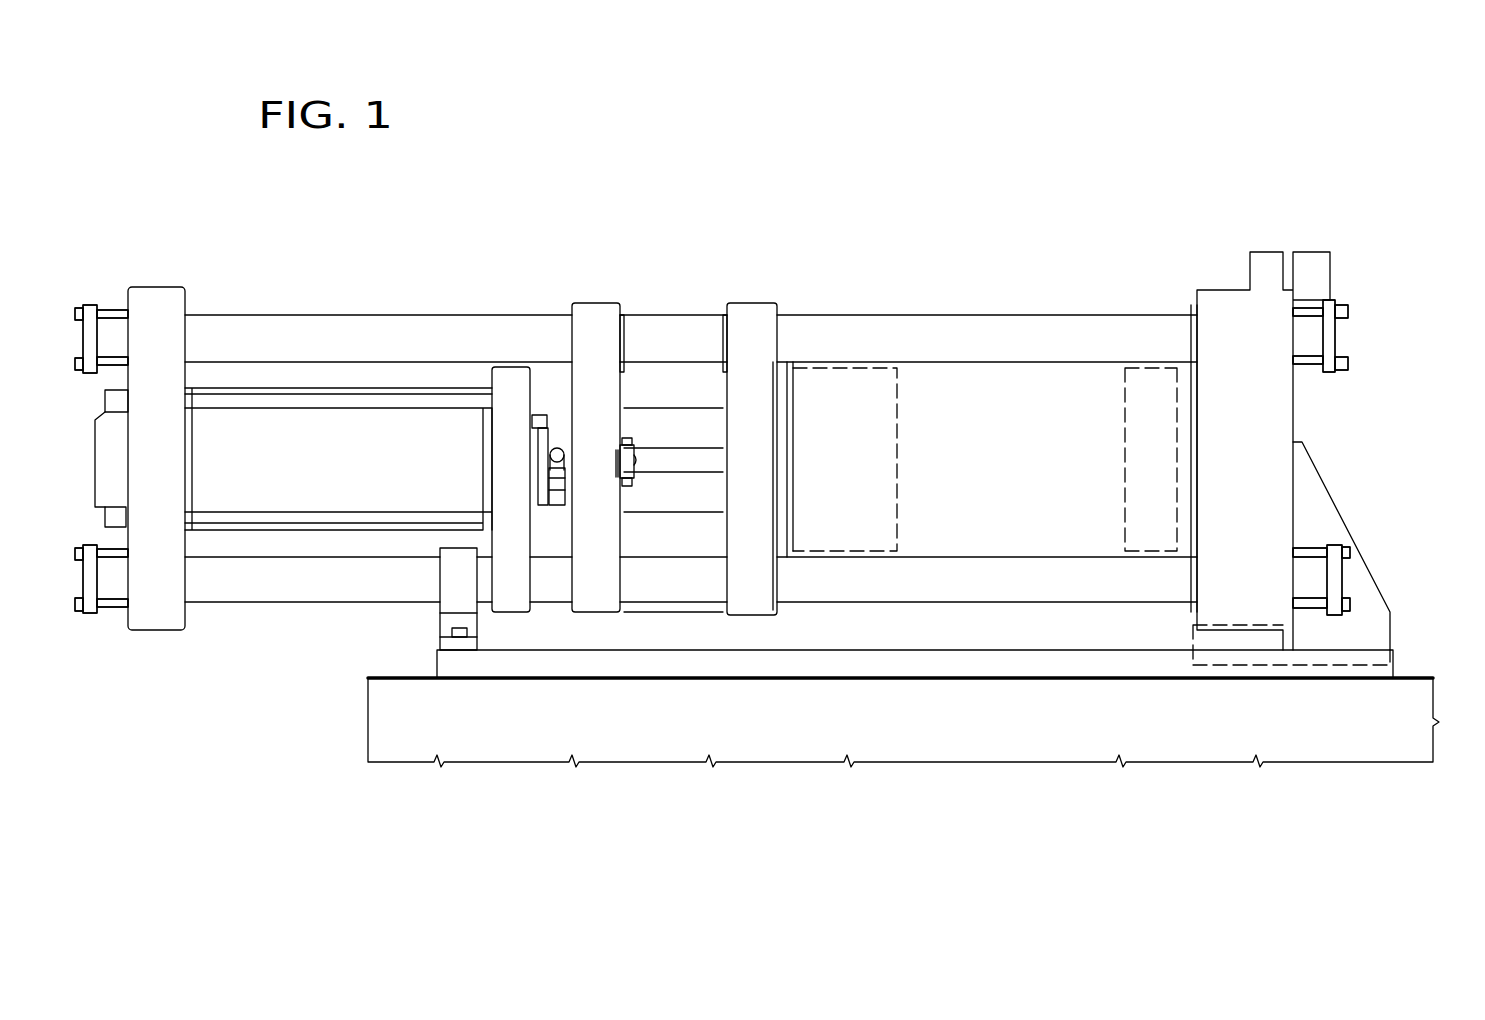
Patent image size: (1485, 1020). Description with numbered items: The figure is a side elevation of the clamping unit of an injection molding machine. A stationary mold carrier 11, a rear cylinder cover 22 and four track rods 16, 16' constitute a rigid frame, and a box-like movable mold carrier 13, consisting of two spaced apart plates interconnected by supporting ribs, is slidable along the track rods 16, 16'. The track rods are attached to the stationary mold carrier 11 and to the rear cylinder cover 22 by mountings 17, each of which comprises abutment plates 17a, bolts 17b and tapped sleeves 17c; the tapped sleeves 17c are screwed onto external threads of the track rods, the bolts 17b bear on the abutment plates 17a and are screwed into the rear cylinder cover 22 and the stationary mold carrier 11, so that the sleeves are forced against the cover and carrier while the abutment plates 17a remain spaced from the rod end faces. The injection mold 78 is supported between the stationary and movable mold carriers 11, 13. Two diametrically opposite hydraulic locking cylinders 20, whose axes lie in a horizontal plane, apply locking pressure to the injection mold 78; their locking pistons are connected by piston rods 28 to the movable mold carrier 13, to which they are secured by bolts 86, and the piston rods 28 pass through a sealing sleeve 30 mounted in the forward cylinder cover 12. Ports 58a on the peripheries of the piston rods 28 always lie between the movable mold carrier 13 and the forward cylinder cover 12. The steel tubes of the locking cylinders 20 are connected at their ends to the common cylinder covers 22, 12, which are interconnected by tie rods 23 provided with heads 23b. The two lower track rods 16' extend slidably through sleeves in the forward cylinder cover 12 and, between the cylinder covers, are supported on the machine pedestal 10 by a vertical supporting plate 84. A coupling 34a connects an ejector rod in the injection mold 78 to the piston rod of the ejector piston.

The machine pedestal 10 is at (978, 715).
The stationary mold carrier 11 is at (1228, 327).
The forward cylinder cover 12 is at (508, 388).
The movable mold carrier 13 is at (743, 343).
The track rods 16 is at (691, 294).
The lower track rods 16' is at (691, 611).
The mountings 17 is at (80, 299).
The abutment plates 17a is at (1337, 582).
The bolts 17b is at (1305, 550).
The tapped sleeves 17c is at (108, 577).
The hydraulic locking cylinders 20 is at (365, 466).
The rear cylinder cover 22 is at (108, 455).
The tie rods 23 is at (248, 402).
The heads 23b is at (128, 505).
The piston rods 28 is at (560, 447).
The sealing sleeve 30 is at (537, 432).
The coupling 34a is at (628, 482).
The ports 58a is at (557, 503).
The injection mold 78 is at (1143, 403).
The vertical supporting plate 84 is at (457, 577).
The bolts 86 is at (614, 452).